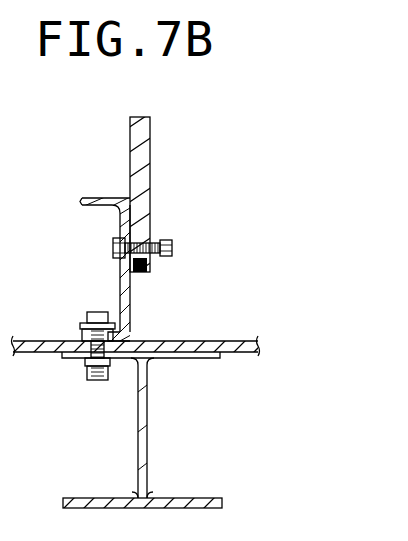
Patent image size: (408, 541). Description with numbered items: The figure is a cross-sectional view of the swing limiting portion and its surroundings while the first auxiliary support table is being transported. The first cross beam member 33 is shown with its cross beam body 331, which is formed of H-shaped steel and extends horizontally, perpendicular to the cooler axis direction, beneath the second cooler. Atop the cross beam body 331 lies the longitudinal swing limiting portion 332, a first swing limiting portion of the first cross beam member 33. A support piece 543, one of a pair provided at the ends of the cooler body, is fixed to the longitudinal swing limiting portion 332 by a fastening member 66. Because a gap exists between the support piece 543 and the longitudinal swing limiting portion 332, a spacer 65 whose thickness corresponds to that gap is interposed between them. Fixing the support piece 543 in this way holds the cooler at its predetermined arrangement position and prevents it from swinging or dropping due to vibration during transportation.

The support piece 543 is at (150, 141).
The spacer 65 is at (130, 284).
The fastening member 66 is at (163, 241).
The first cross beam member 33 is at (186, 404).
The longitudinal swing limiting portion 332 is at (132, 322).
The cross beam body 331 is at (147, 400).